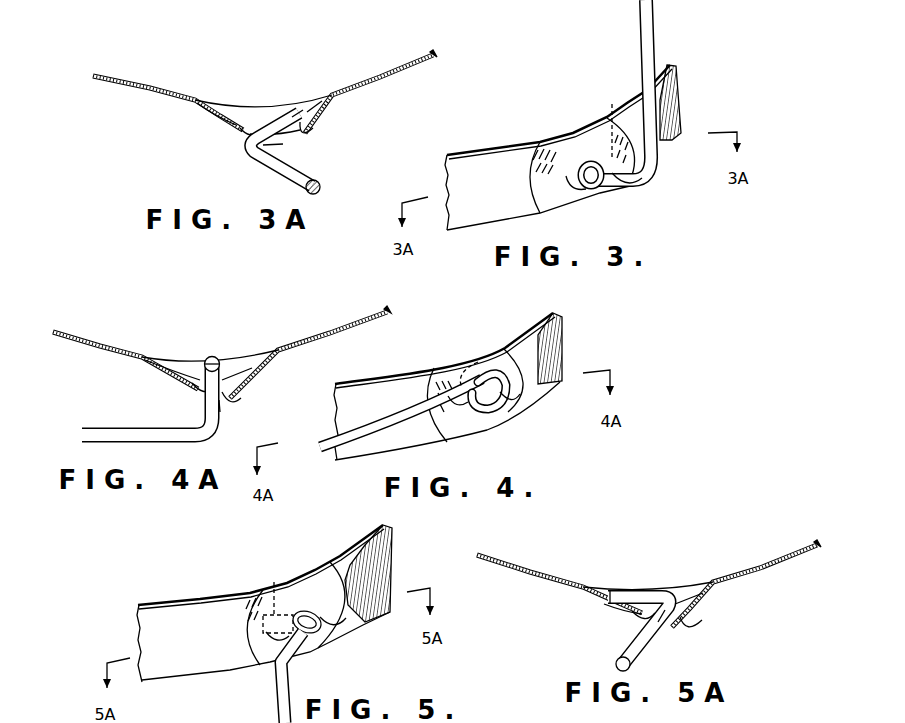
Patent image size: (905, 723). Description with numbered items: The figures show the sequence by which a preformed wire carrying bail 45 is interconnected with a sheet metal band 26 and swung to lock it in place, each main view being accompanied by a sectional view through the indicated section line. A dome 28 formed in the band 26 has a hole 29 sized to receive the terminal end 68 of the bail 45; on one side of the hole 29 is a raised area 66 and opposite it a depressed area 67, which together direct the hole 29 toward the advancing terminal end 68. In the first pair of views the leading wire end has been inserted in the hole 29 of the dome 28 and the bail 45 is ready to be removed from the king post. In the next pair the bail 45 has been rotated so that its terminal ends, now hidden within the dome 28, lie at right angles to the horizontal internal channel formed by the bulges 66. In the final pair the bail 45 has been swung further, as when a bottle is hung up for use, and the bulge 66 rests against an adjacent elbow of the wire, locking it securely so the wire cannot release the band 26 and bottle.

In FIG. 3A, the band 26 is at (405, 77).
In FIG. 3, the band 26 is at (476, 196).
In FIG. 4A, the band 26 is at (342, 325).
In FIG. 4, the band 26 is at (373, 447).
In FIG. 5, the band 26 is at (173, 653).
In FIG. 5A, the band 26 is at (765, 570).
In FIG. 3A, the dome 28 is at (223, 107).
In FIG. 3, the dome 28 is at (580, 145).
In FIG. 4A, the dome 28 is at (172, 360).
In FIG. 4, the dome 28 is at (495, 424).
In FIG. 5, the dome 28 is at (340, 622).
In FIG. 5A, the dome 28 is at (686, 588).
In FIG. 3A, the hole 29 is at (275, 151).
In FIG. 3, the hole 29 is at (596, 187).
In FIG. 4A, the hole 29 is at (224, 403).
In FIG. 4, the hole 29 is at (477, 404).
In FIG. 5, the hole 29 is at (312, 614).
In FIG. 5A, the hole 29 is at (659, 632).
In FIG. 3A, the bail 45 is at (277, 177).
In FIG. 3, the bail 45 is at (647, 33).
In FIG. 4A, the bail 45 is at (116, 430).
In FIG. 4, the bail 45 is at (397, 410).
In FIG. 5, the bail 45 is at (292, 677).
In FIG. 5A, the bail 45 is at (612, 664).
In FIG. 3A, the raised area 66 is at (299, 137).
In FIG. 3, the raised area 66 is at (624, 182).
In FIG. 4A, the raised area 66 is at (243, 397).
In FIG. 4, the raised area 66 is at (508, 397).
In FIG. 5, the raised area 66 is at (333, 625).
In FIG. 5A, the raised area 66 is at (692, 622).
In FIG. 3A, the depressed area 67 is at (233, 133).
In FIG. 3, the depressed area 67 is at (570, 182).
In FIG. 4A, the depressed area 67 is at (192, 388).
In FIG. 4, the depressed area 67 is at (462, 408).
In FIG. 5, the depressed area 67 is at (280, 638).
In FIG. 5A, the depressed area 67 is at (628, 621).
In FIG. 3A, the terminal end 68 is at (284, 118).
In FIG. 3, the terminal end 68 is at (613, 104).
In FIG. 4A, the terminal end 68 is at (220, 358).
In FIG. 4, the terminal end 68 is at (478, 361).
In FIG. 5, the terminal end 68 is at (275, 582).
In FIG. 5A, the terminal end 68 is at (638, 595).